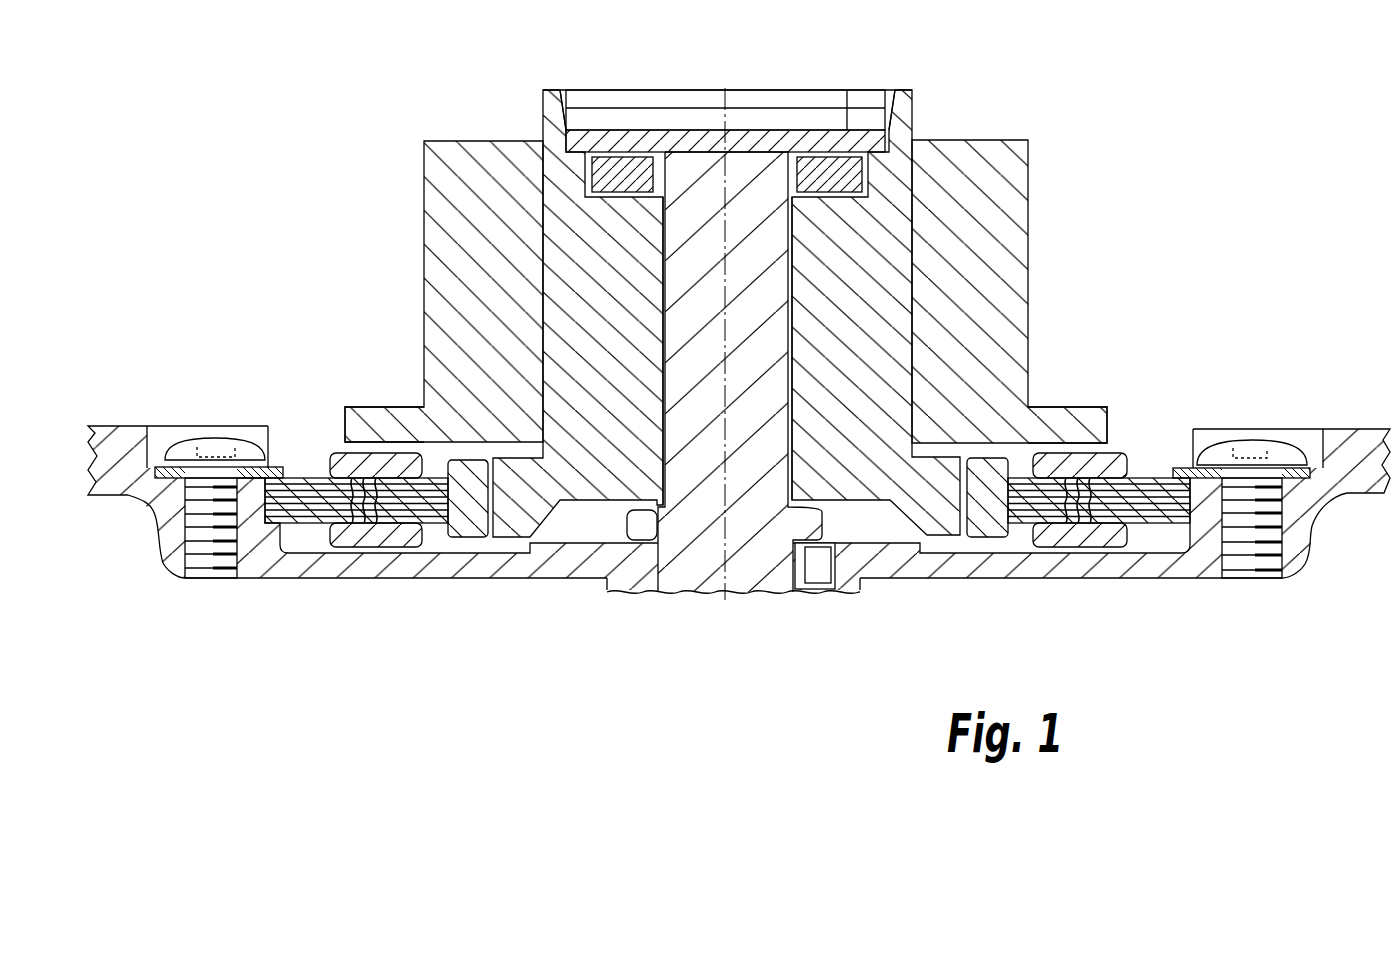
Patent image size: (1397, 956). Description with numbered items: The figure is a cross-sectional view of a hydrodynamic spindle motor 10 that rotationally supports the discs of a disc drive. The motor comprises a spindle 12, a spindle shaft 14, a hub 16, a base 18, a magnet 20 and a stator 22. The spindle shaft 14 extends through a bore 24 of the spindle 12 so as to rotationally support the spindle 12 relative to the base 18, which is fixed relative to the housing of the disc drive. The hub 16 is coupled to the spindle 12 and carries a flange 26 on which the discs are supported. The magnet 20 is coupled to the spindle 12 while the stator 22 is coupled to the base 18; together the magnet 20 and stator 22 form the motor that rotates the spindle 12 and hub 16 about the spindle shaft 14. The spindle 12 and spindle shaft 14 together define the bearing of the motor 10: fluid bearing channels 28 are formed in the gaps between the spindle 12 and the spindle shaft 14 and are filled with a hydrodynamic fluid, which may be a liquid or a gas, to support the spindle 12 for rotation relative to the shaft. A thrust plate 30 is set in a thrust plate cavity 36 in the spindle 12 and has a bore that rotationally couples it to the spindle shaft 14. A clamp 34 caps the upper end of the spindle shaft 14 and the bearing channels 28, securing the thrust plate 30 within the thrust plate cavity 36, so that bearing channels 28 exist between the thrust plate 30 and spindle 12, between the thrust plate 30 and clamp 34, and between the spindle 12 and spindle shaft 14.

The hydrodynamic spindle motor 10 is at (975, 116).
The spindle 12 is at (866, 295).
The spindle shaft 14 is at (736, 170).
The hub 16 is at (1031, 284).
The base 18 is at (1336, 440).
The magnet 20 is at (1007, 462).
The stator 22 is at (1122, 468).
The bore 24 is at (657, 327).
The flange 26 is at (395, 407).
The fluid bearing channels 28 is at (790, 270).
The thrust plate 30 is at (656, 150).
The clamp 34 is at (621, 88).
The thrust plate cavity 36 is at (536, 150).